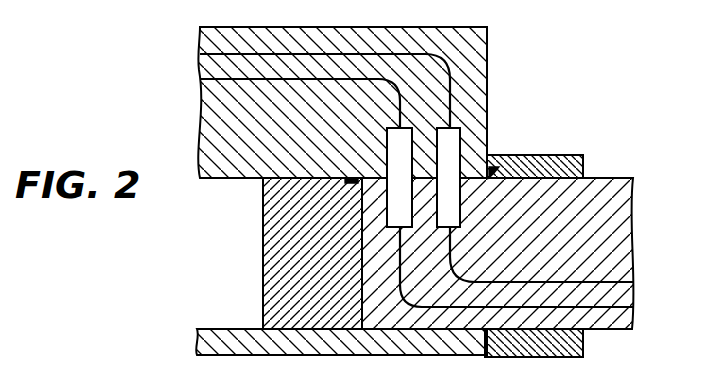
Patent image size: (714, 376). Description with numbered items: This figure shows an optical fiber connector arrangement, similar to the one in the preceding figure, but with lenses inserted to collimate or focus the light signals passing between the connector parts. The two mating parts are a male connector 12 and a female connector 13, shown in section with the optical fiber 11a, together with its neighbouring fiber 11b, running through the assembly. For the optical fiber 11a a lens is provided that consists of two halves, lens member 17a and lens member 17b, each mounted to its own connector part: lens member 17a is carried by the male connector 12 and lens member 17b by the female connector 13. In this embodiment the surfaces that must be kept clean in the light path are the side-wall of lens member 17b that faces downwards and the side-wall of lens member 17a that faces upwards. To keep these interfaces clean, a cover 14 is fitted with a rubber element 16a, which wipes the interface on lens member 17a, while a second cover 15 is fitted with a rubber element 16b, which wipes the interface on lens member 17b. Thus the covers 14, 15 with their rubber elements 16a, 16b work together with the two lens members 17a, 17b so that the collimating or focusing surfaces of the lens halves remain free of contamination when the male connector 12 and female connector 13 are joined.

The optical fiber 11a is at (200, 54).
The second conductor lead 11b is at (200, 79).
The male connector 12 is at (590, 238).
The female connector 13 is at (262, 120).
The cover 14 is at (560, 163).
The cover 15 is at (305, 237).
The rubber element 16a is at (497, 167).
The rubber element 16b is at (355, 181).
The lens member 17a is at (452, 190).
The lens member 17b is at (456, 137).